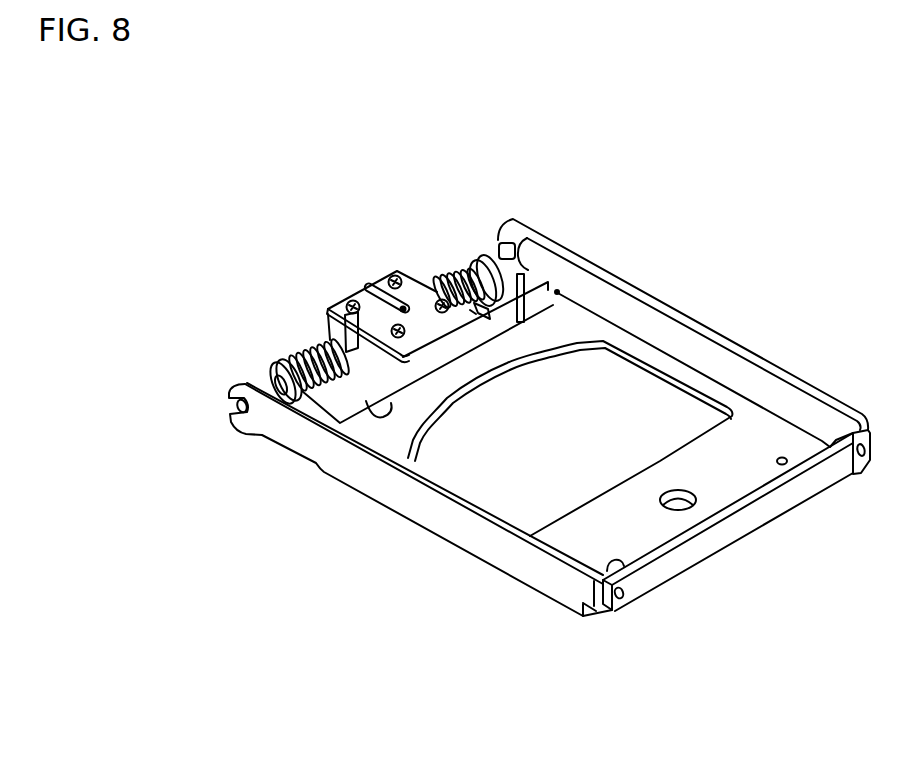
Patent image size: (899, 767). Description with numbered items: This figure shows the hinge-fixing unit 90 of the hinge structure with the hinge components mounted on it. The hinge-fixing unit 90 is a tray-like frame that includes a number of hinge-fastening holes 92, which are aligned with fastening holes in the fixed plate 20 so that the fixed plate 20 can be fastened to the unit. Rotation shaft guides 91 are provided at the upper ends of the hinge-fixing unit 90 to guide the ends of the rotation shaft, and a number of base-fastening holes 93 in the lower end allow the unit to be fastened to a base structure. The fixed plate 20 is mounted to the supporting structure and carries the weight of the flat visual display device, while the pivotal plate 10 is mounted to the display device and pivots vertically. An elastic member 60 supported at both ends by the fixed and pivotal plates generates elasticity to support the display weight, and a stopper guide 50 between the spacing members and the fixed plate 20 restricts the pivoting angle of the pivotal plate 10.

The pivotal plate 10 is at (287, 368).
The fixed plate 20 is at (377, 293).
The stopper guide 50 is at (338, 352).
The elastic member 60 is at (308, 353).
The hinge-fixing unit 90 is at (701, 307).
The rotation shaft guide 91 is at (502, 248).
The hinge-fastening hole 92 is at (397, 273).
The base-fastening hole 93 is at (622, 597).